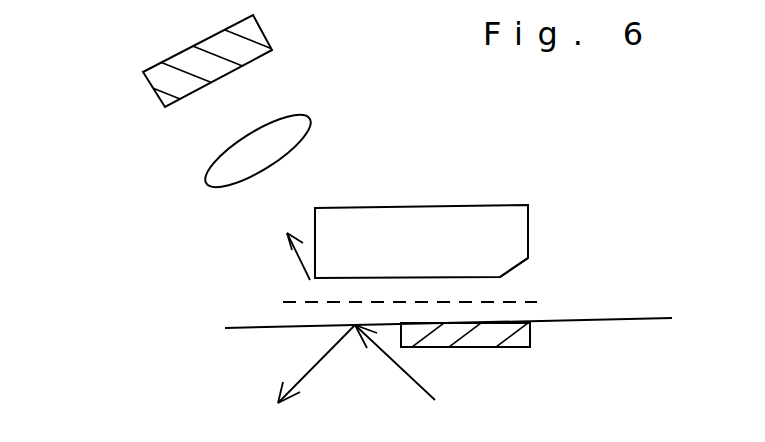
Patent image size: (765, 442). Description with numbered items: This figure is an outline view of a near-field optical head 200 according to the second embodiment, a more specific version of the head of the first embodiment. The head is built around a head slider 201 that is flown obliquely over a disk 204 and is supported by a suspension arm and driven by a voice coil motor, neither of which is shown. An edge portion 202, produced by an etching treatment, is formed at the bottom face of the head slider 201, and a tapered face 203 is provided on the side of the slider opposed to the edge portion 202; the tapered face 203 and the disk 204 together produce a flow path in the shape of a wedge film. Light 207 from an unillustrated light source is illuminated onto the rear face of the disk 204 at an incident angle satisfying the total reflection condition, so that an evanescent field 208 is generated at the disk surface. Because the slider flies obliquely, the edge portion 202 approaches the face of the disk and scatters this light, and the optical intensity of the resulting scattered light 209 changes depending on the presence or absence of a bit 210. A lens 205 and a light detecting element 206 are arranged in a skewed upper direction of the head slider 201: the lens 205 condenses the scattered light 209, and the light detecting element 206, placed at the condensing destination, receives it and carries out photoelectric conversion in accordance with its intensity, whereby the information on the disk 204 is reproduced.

The near-field optical head 200 is at (103, 122).
The head slider 201 is at (513, 233).
The edge portion 202 is at (320, 277).
The tapered face 203 is at (520, 262).
The disk 204 is at (640, 335).
The lens 205 is at (293, 127).
The light detecting element 206 is at (257, 35).
The light 207 is at (418, 380).
The evanescent field 208 is at (293, 305).
The scattered light 209 is at (297, 262).
The bit 210 is at (518, 340).